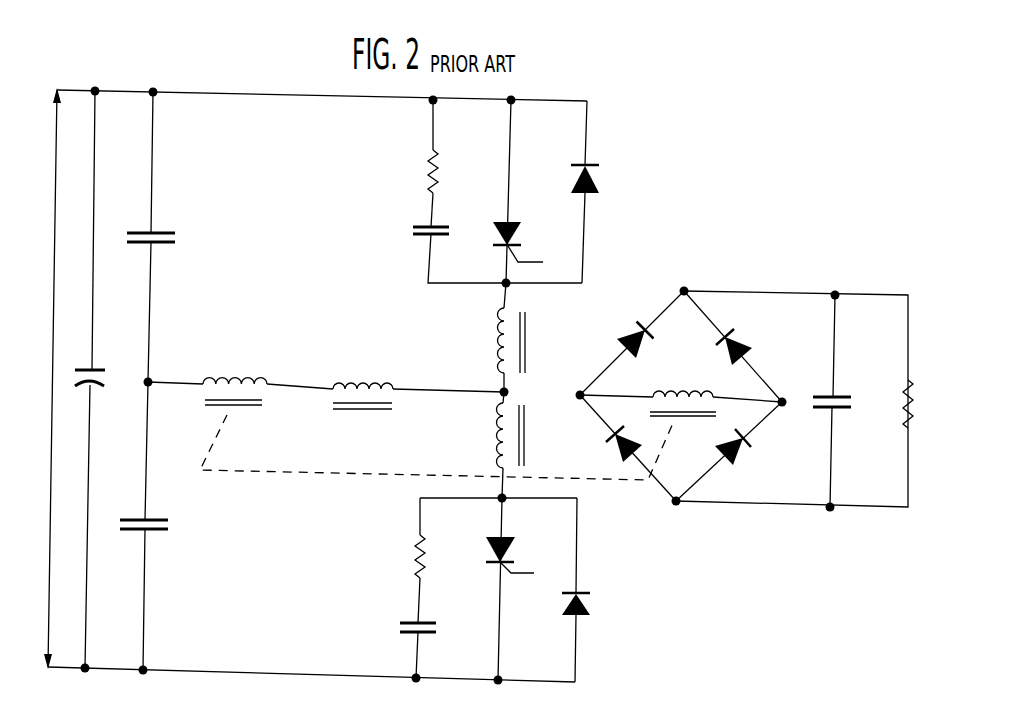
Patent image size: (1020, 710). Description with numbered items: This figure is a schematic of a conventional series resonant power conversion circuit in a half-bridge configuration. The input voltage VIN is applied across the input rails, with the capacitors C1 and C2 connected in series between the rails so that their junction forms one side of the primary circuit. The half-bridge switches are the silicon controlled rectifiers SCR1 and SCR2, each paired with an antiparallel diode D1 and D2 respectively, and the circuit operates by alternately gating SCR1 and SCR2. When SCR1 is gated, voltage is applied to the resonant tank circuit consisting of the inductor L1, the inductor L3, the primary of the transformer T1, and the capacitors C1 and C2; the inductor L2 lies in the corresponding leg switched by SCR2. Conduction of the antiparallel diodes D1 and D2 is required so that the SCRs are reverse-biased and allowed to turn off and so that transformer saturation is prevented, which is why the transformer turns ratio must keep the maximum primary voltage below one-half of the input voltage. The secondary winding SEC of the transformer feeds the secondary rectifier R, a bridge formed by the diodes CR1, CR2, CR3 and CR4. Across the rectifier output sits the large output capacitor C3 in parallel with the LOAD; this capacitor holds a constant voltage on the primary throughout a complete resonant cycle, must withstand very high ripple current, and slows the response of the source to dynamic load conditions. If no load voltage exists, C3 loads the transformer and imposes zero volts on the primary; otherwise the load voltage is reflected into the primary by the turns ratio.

The input voltage VIN is at (49, 378).
The tank capacitor C1 is at (166, 237).
The tank capacitor C2 is at (162, 526).
The output capacitor C3 is at (837, 401).
The transformer T1 is at (241, 377).
The inductor L3 is at (363, 380).
The inductor L1 is at (525, 337).
The inductor L2 is at (524, 445).
The silicon controlled rectifier SCR1 is at (529, 191).
The silicon controlled rectifier SCR2 is at (524, 589).
The antiparallel diode D1 is at (601, 192).
The antiparallel diode D2 is at (591, 590).
The rectifier diode CR1 is at (632, 343).
The rectifier diode CR2 is at (733, 346).
The rectifier diode CR3 is at (732, 451).
The rectifier diode CR4 is at (624, 448).
The transformer secondary winding SEC is at (681, 391).
The secondary rectifier R is at (676, 321).
The load LOAD is at (888, 404).